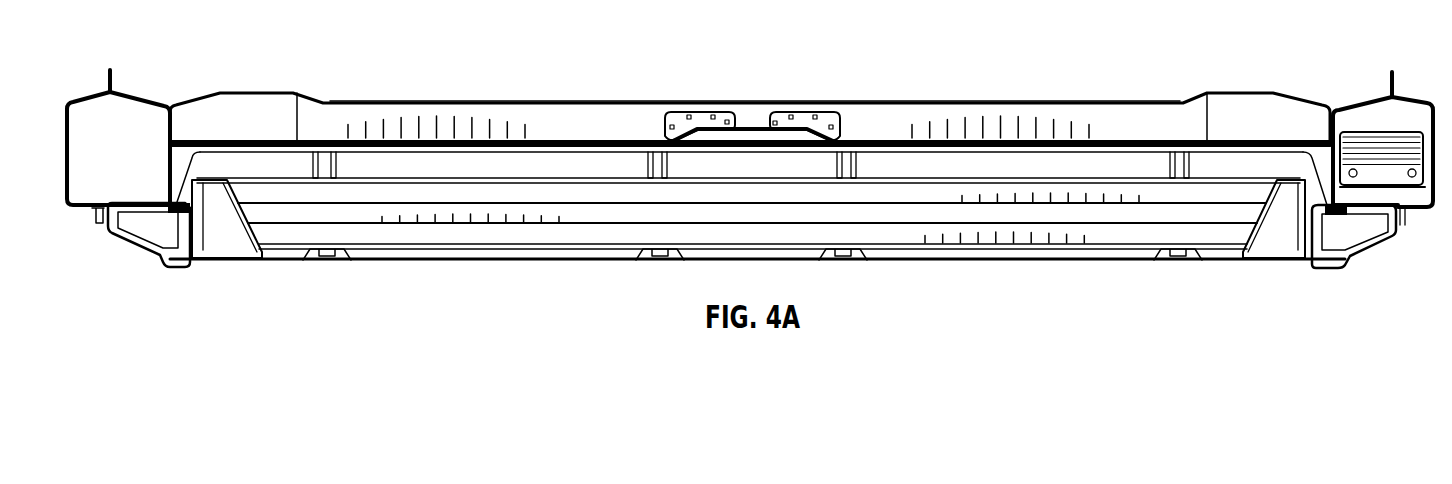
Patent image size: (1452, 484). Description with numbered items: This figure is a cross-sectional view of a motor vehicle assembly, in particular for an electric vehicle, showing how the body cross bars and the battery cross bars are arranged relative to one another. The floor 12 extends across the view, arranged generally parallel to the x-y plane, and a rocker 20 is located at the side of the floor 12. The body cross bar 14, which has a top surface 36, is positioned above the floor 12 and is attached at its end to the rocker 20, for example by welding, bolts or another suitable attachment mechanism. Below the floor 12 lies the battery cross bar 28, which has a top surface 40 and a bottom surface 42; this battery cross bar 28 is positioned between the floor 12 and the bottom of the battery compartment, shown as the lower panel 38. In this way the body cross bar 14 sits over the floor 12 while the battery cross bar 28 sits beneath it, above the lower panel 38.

The floor 12 is at (598, 142).
The body cross bar 14 is at (1040, 102).
The top surface 36 is at (627, 102).
The rocker 20 is at (1387, 153).
The lower panel 38 is at (265, 262).
The bottom surface 42 is at (408, 252).
The top surface 40 is at (558, 187).
The battery cross bar 28 is at (1113, 215).